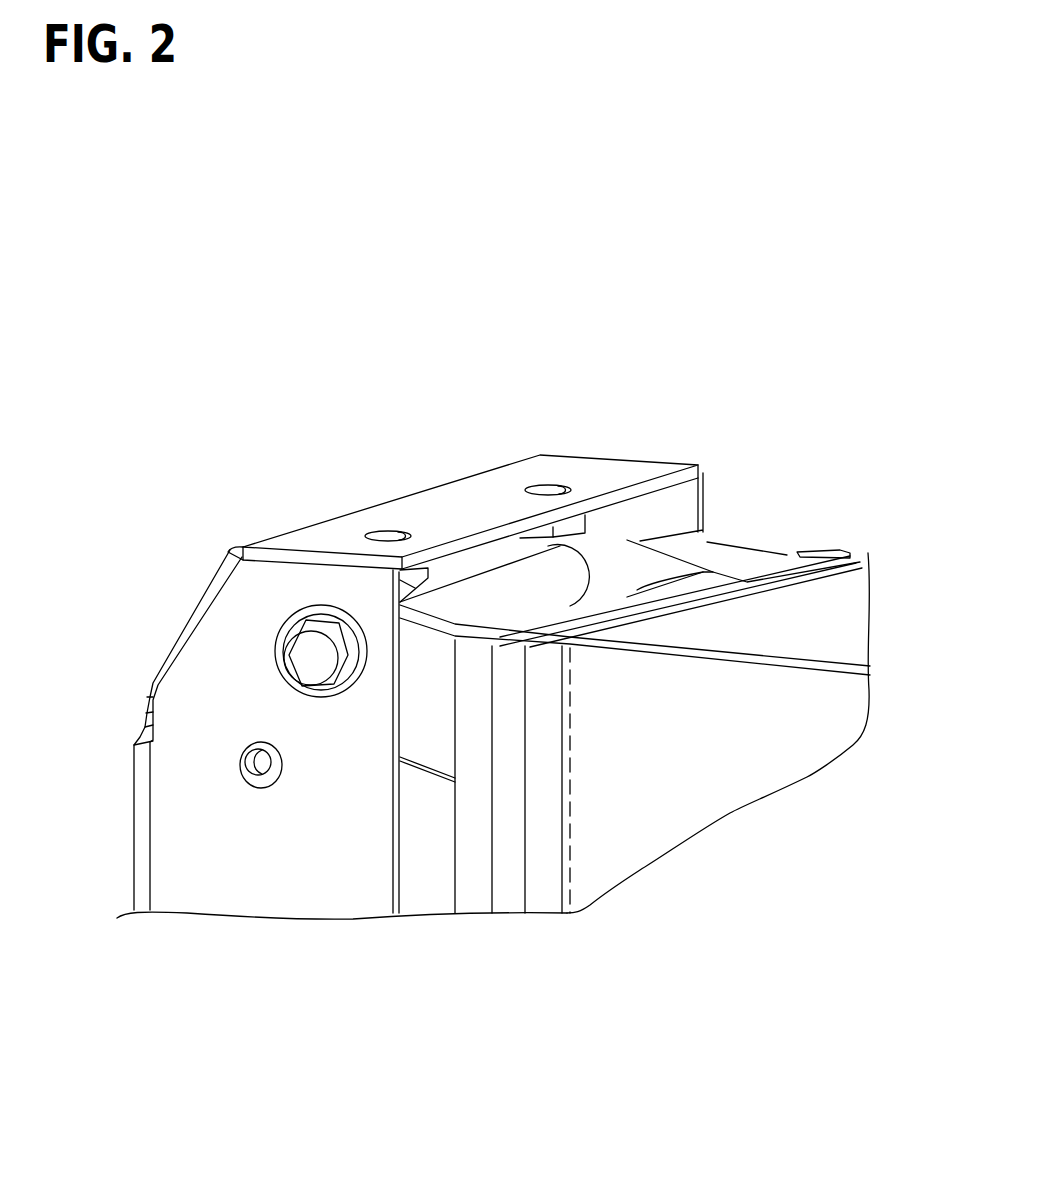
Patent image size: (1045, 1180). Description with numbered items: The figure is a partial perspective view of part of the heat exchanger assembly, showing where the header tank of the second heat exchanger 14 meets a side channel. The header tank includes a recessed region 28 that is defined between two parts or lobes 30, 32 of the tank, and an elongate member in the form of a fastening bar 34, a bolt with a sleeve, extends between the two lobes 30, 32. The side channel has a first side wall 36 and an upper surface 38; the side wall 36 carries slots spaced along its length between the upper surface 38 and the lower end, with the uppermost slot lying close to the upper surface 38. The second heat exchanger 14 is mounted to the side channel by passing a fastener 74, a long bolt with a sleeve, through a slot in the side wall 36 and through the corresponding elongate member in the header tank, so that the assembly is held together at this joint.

The second heat exchanger 14 is at (868, 507).
The recessed region 28 is at (500, 552).
The lobe 30 is at (707, 545).
The lobe 32 is at (425, 723).
The fastening bar 34 is at (540, 583).
The first side wall 36 is at (187, 893).
The upper surface 38 is at (337, 525).
The fastener 74 is at (307, 652).